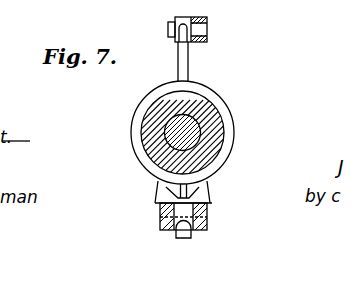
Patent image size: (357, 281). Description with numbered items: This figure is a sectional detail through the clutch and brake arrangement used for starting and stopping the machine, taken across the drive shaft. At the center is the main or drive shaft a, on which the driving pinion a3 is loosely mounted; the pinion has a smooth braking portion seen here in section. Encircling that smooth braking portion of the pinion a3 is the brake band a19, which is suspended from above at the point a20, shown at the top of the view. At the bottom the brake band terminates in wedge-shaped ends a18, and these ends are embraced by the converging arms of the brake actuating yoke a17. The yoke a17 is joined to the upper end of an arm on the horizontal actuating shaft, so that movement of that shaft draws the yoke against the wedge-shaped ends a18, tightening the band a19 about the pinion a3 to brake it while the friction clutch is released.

The drive shaft a is at (223, 133).
The driving pinion a3 is at (142, 133).
The brake actuating yoke a17 is at (163, 204).
The wedge-shaped ends of brake band a18 is at (209, 196).
The brake band a19 is at (224, 110).
The suspension point of brake band a20 is at (197, 30).